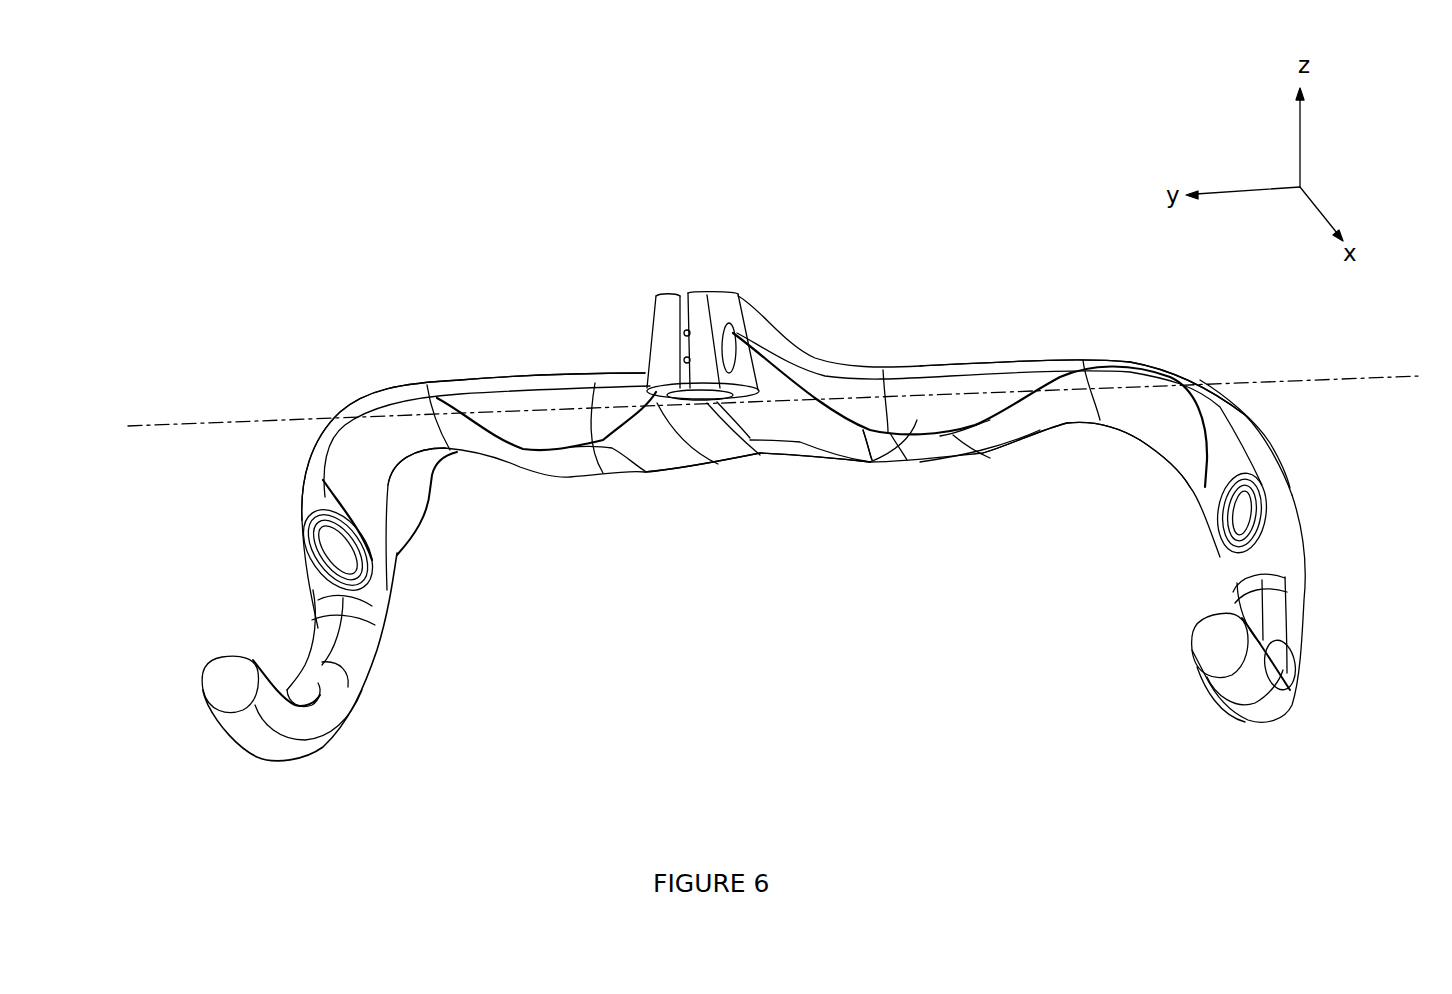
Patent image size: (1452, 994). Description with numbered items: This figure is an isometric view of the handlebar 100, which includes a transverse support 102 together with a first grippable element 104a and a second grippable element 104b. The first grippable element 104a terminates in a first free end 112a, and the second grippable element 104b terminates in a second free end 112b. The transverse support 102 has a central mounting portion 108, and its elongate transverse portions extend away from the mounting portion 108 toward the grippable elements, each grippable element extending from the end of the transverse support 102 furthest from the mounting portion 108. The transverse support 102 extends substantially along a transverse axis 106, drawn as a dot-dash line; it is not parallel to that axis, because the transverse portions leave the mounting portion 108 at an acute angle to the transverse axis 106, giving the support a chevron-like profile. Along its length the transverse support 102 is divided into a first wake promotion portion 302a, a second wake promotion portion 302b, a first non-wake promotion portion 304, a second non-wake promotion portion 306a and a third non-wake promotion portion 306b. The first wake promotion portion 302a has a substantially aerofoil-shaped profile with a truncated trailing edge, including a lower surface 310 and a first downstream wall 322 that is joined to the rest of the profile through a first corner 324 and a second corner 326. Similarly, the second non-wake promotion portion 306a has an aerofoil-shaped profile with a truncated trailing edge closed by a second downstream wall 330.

The handlebar 100 is at (1047, 222).
The transverse support 102 is at (694, 603).
The first grippable element 104a is at (306, 557).
The second grippable element 104b is at (1288, 596).
The transverse axis 106 is at (130, 426).
The mounting portion 108 is at (767, 284).
The first free end 112a is at (225, 689).
The second free end 112b is at (1218, 648).
The first wake promotion portion 302a is at (988, 478).
The second wake promotion portion 302b is at (590, 483).
The first non-wake promotion portion 304 is at (757, 478).
The second non-wake promotion portion 306a is at (1095, 447).
The third non-wake promotion portion 306b is at (470, 476).
The lower surface 310 is at (953, 450).
The first downstream wall 322 is at (873, 450).
The first corner 324 is at (935, 362).
The second corner 326 is at (948, 438).
The second downstream wall 330 is at (1128, 367).